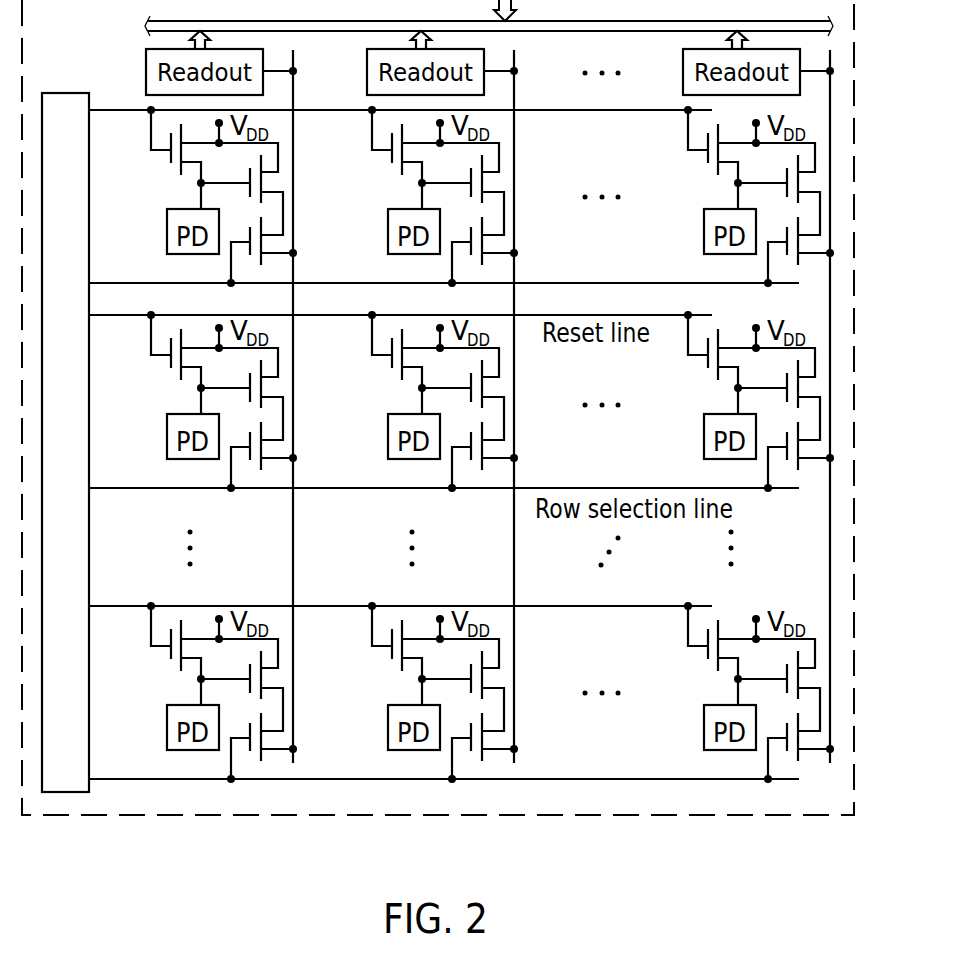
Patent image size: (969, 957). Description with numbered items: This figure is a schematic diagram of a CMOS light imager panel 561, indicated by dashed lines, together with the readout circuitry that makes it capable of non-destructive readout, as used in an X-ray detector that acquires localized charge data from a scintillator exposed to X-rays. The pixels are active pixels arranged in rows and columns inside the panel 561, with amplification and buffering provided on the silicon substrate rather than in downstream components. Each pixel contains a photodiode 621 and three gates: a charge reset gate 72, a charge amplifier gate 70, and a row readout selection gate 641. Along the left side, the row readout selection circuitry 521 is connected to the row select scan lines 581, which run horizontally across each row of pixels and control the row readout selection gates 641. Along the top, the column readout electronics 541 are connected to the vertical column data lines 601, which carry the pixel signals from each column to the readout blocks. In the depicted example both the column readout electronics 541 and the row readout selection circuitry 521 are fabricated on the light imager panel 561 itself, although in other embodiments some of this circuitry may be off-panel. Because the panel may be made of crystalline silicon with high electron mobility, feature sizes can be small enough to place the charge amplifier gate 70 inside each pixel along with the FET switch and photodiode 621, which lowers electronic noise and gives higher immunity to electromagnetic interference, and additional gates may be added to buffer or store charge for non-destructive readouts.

The column readout electronics 541 is at (116, 62).
The row readout selection circuitry 521 is at (67, 793).
The CMOS light imager panel 561 is at (853, 363).
The row select scan line 581 is at (745, 491).
The charge reset gate 72 is at (160, 646).
The row readout selection gate 641 is at (238, 740).
The column data line 601 is at (294, 707).
The photodiode 621 is at (410, 750).
The charge amplifier gate 70 is at (736, 680).